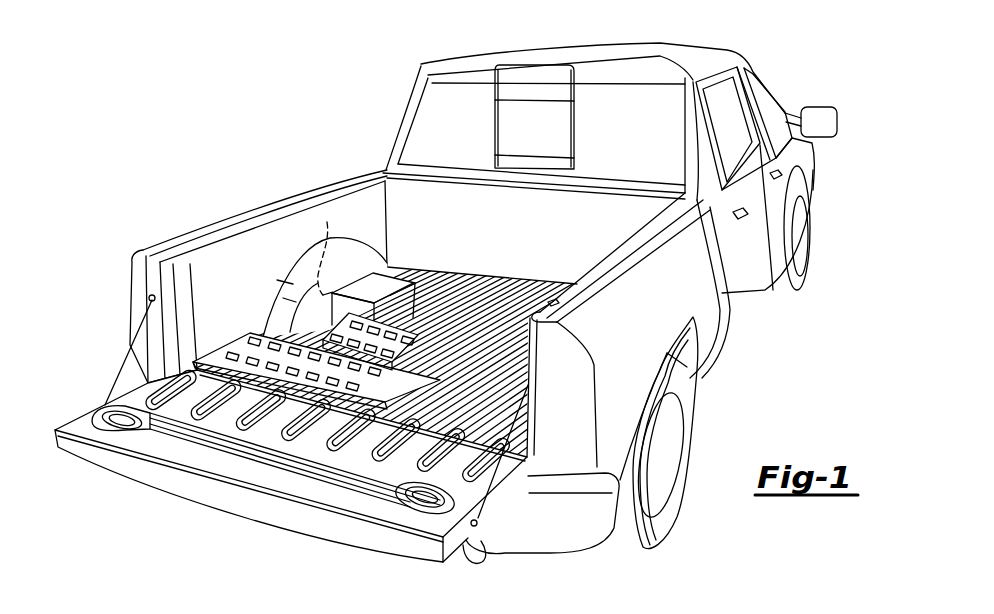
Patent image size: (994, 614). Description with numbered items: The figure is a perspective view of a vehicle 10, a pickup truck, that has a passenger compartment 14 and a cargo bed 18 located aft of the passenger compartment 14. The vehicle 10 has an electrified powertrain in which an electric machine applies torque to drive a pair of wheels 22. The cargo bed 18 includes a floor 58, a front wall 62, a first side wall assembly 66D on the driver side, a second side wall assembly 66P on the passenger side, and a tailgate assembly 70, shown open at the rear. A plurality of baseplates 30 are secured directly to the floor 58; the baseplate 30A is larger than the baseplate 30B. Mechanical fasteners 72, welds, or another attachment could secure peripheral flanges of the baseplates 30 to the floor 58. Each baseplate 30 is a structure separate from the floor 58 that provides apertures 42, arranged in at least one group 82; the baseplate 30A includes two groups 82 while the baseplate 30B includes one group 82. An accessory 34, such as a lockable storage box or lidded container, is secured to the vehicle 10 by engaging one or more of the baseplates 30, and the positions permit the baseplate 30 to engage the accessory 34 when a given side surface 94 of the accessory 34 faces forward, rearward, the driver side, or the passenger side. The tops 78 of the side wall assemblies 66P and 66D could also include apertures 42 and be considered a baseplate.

The vehicle 10 is at (616, 147).
The passenger compartment 14 is at (640, 38).
The cargo bed 18 is at (722, 290).
The wheels 22 is at (662, 528).
The baseplates 30 is at (340, 380).
The baseplate 30A is at (388, 398).
The baseplate 30B is at (420, 330).
The accessory 34 is at (400, 262).
The apertures 42 is at (306, 368).
The floor 58 is at (487, 420).
The front wall 62 is at (597, 213).
The first side wall assembly 66D is at (270, 207).
The second side wall assembly 66P is at (705, 250).
The tailgate assembly 70 is at (305, 520).
The mechanical fasteners 72 is at (215, 375).
The tops 78 is at (230, 227).
The group 82 is at (412, 310).
The side surface 94 is at (365, 267).